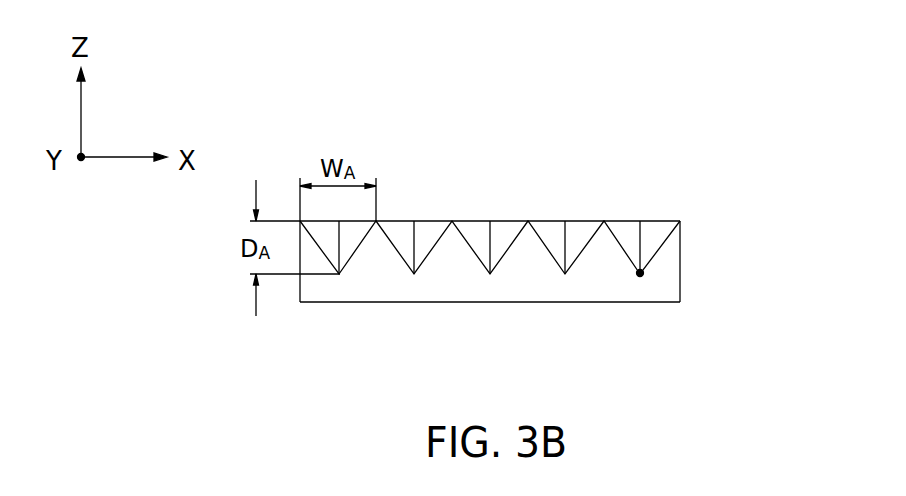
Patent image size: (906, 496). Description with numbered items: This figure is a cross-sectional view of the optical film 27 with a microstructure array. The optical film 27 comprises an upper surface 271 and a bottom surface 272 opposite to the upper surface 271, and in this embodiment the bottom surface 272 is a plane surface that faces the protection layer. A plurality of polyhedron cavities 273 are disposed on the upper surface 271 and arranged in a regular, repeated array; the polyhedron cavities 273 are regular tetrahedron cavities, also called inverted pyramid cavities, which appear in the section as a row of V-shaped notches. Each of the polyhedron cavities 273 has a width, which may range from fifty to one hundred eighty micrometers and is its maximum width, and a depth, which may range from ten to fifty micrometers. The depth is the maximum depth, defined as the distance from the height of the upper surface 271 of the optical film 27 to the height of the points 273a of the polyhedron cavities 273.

The optical film with microstructure array 27 is at (538, 248).
The upper surface 271 is at (660, 221).
The bottom surface 272 is at (628, 302).
The polyhedron cavities 273 is at (635, 235).
The points of the polyhedron cavities 273a is at (643, 273).